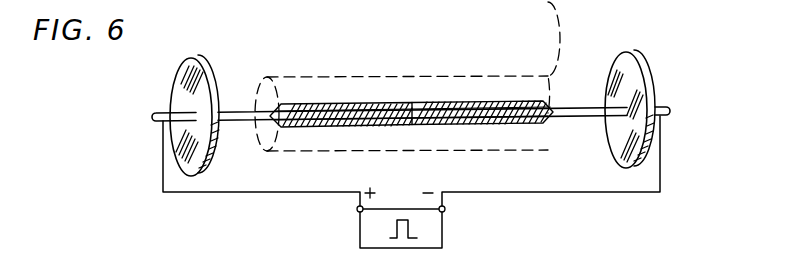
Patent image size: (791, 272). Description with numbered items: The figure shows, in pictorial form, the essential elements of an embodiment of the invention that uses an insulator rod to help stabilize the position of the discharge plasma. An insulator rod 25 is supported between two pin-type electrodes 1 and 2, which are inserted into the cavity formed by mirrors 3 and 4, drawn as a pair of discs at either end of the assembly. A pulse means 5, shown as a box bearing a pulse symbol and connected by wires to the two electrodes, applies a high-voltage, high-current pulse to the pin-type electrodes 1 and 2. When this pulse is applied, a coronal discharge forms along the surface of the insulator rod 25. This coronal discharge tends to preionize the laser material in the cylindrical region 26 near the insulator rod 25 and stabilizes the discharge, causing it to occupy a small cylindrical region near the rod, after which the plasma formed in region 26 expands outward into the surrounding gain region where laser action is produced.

The pin-type electrode 1 is at (160, 114).
The pin-type electrode 2 is at (668, 106).
The mirror 3 is at (207, 62).
The mirror 4 is at (646, 63).
The pulse means 5 is at (360, 230).
The insulator rod 25 is at (368, 118).
The cylindrical region 26 is at (492, 108).